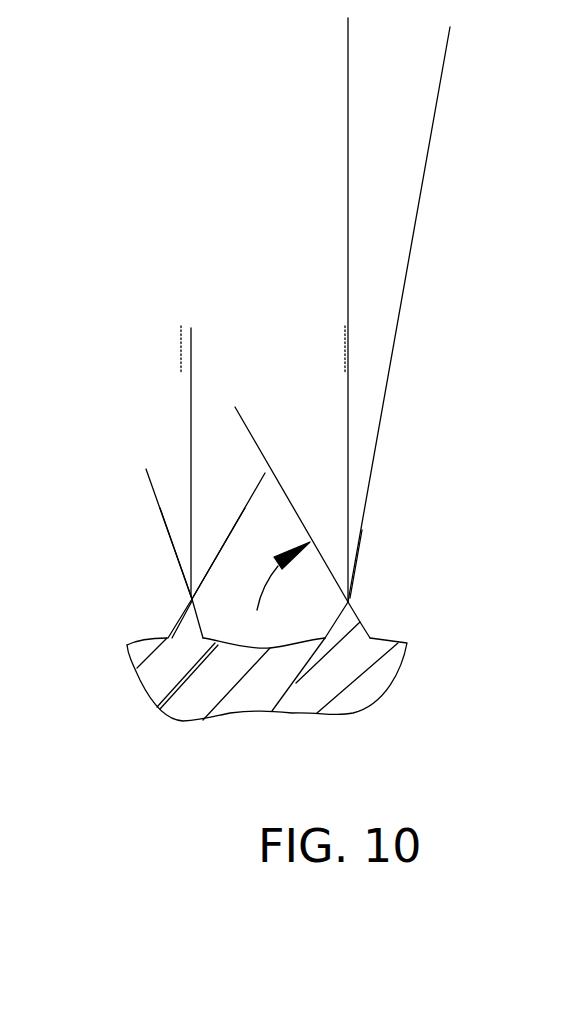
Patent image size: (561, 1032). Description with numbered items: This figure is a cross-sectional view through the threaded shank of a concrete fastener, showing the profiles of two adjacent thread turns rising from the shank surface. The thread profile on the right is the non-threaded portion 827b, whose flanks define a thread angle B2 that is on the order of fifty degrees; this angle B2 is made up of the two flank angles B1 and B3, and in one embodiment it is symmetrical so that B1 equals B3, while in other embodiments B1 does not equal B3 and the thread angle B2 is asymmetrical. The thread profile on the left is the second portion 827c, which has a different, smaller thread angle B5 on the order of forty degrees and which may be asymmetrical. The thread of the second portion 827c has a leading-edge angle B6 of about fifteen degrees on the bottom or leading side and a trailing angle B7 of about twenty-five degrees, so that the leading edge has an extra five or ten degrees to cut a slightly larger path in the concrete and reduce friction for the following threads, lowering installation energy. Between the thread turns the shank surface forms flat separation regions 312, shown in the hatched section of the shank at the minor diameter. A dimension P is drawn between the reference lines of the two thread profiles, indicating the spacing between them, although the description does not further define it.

The thread flank angle B1 is at (424, 119).
The thread angle B2 is at (409, 536).
The thread flank angle B3 is at (337, 472).
The thread angle B5 is at (220, 532).
The leading-edge angle B6 is at (181, 471).
The trailing angle B7 is at (247, 486).
The pitch between teeth P is at (338, 350).
The separation region 312 is at (158, 705).
The non-threaded portion of thread 827b is at (361, 620).
The second portion of thread 827c is at (170, 632).